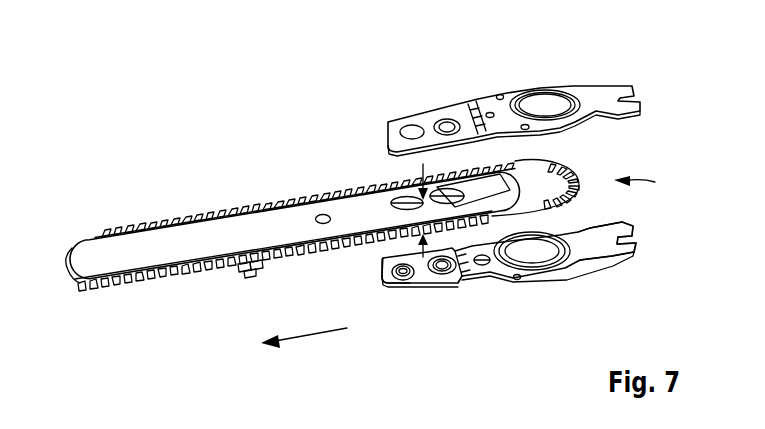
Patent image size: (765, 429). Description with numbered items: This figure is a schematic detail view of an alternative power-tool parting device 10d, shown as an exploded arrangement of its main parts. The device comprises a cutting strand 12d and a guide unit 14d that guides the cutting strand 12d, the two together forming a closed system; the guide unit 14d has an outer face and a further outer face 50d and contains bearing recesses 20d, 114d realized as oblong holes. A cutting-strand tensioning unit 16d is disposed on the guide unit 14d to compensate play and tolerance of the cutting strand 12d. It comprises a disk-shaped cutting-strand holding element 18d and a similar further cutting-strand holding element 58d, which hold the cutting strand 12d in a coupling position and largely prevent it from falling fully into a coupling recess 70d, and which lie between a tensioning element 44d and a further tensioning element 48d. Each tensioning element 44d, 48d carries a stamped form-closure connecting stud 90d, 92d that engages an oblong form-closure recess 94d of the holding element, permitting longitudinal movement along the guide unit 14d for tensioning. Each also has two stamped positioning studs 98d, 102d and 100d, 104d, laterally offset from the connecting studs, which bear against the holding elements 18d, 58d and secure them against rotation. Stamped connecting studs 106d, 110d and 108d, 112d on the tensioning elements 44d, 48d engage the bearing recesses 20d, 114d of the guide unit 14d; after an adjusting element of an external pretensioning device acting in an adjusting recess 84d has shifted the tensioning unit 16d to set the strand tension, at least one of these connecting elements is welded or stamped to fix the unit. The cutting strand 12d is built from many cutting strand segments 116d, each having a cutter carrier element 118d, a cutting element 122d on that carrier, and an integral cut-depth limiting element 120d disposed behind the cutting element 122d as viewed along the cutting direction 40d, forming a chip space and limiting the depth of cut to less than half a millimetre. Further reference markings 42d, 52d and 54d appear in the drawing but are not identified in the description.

The power-tool parting device 10d is at (120, 76).
The cutting strand 12d is at (137, 287).
The guide unit 14d is at (176, 243).
The cutting-strand tensioning unit 16d is at (636, 72).
The cutting-strand holding element 18d is at (557, 278).
The bearing recess 20d is at (404, 200).
The cutting direction 40d is at (300, 335).
The mounting direction 42d is at (651, 184).
The tensioning element 44d is at (597, 258).
The further tensioning element 48d is at (563, 96).
The further outer face 50d is at (270, 230).
The fastening opening 52d is at (449, 276).
The guide opening 54d is at (494, 268).
The further cutting-strand holding element 58d is at (552, 91).
The coupling recess 70d is at (530, 106).
The adjusting recess 84d is at (447, 121).
The form-closure connecting element 90d is at (484, 268).
The form-closure connecting element 92d is at (489, 113).
The form-closure recess 94d is at (455, 270).
The positioning element 98d is at (520, 280).
The positioning element 100d is at (529, 127).
The positioning element 102d is at (558, 236).
The positioning element 104d is at (499, 94).
The connecting element 106d is at (386, 284).
The connecting element 108d is at (407, 130).
The connecting element 110d is at (421, 284).
The connecting element 112d is at (440, 123).
The bearing recess 114d is at (458, 174).
The cutting strand segment 116d is at (270, 270).
The cutter carrier element 118d is at (253, 278).
The cut-depth limiting element 120d is at (255, 270).
The cutting element 122d is at (248, 273).